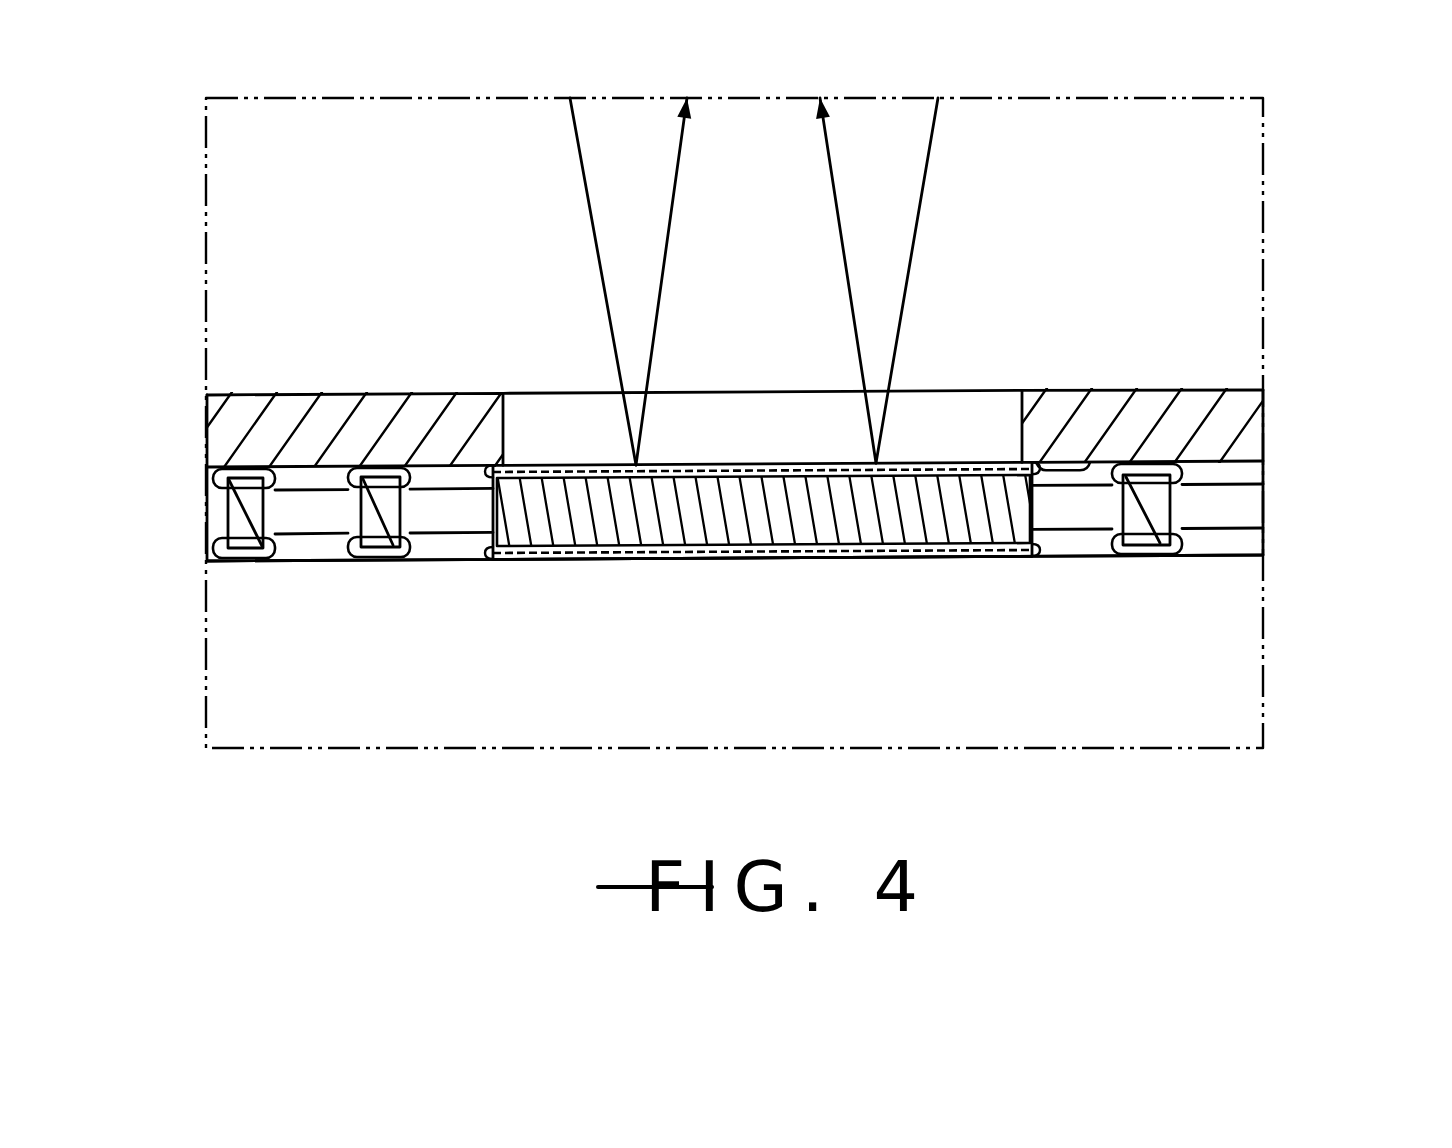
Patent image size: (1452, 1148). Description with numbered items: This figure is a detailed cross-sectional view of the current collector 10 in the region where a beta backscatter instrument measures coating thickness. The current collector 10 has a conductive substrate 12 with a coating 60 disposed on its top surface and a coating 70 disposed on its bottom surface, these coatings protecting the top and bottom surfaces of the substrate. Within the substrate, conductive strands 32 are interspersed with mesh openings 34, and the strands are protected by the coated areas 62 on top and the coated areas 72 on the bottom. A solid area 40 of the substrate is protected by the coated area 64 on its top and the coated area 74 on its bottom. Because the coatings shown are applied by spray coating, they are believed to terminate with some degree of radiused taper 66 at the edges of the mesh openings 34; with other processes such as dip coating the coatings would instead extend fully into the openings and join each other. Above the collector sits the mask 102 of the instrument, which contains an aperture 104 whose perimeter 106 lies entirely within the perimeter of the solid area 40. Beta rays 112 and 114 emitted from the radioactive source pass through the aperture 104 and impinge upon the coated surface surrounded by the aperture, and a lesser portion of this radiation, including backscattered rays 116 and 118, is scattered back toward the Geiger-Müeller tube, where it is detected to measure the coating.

The current collector 10 is at (197, 560).
The conductive substrate 12 is at (1283, 505).
The conductive strands 32 is at (245, 508).
The mesh openings 34 is at (308, 508).
The solid area 40 is at (770, 520).
The coating 60 is at (1283, 468).
The coated areas 62 is at (247, 466).
The coated area 64 is at (729, 463).
The radiused taper 66 is at (1085, 462).
The coating 70 is at (1283, 535).
The coated areas 72 is at (243, 564).
The coated area 74 is at (645, 558).
The mask 102 is at (1267, 427).
The aperture 104 is at (952, 427).
The perimeter 106 is at (503, 418).
The beta ray 112 is at (573, 147).
The beta ray 114 is at (927, 207).
The backscattered ray 116 is at (673, 213).
The backscattered ray 118 is at (835, 230).